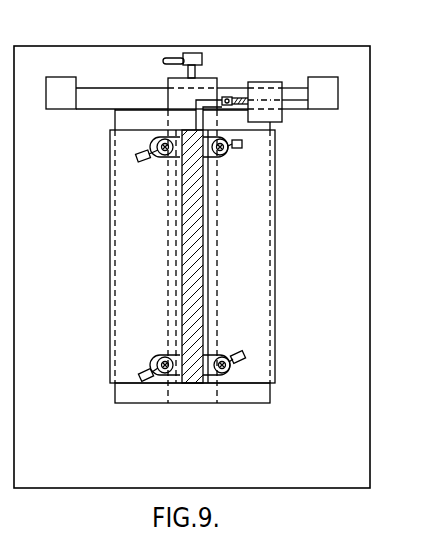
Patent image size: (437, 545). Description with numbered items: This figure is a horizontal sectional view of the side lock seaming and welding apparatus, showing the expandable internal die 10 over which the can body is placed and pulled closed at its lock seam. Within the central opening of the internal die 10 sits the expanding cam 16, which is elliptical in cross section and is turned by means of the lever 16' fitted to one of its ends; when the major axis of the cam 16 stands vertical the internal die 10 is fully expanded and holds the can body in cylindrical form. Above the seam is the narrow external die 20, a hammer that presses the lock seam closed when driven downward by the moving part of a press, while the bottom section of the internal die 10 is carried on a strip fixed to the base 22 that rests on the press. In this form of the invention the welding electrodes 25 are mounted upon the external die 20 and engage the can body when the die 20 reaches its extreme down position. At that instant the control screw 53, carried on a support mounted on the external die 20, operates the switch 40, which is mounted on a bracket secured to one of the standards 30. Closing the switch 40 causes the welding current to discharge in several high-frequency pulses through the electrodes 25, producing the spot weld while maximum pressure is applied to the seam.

The internal die 10 is at (112, 123).
The expanding cam 16 is at (216, 81).
The lever 16' is at (200, 55).
The external die 20 is at (202, 288).
The base 22 is at (90, 479).
The welding electrodes 25 is at (160, 158).
The standard 30 is at (322, 104).
The switch 40 is at (260, 86).
The control screw 53 is at (227, 97).